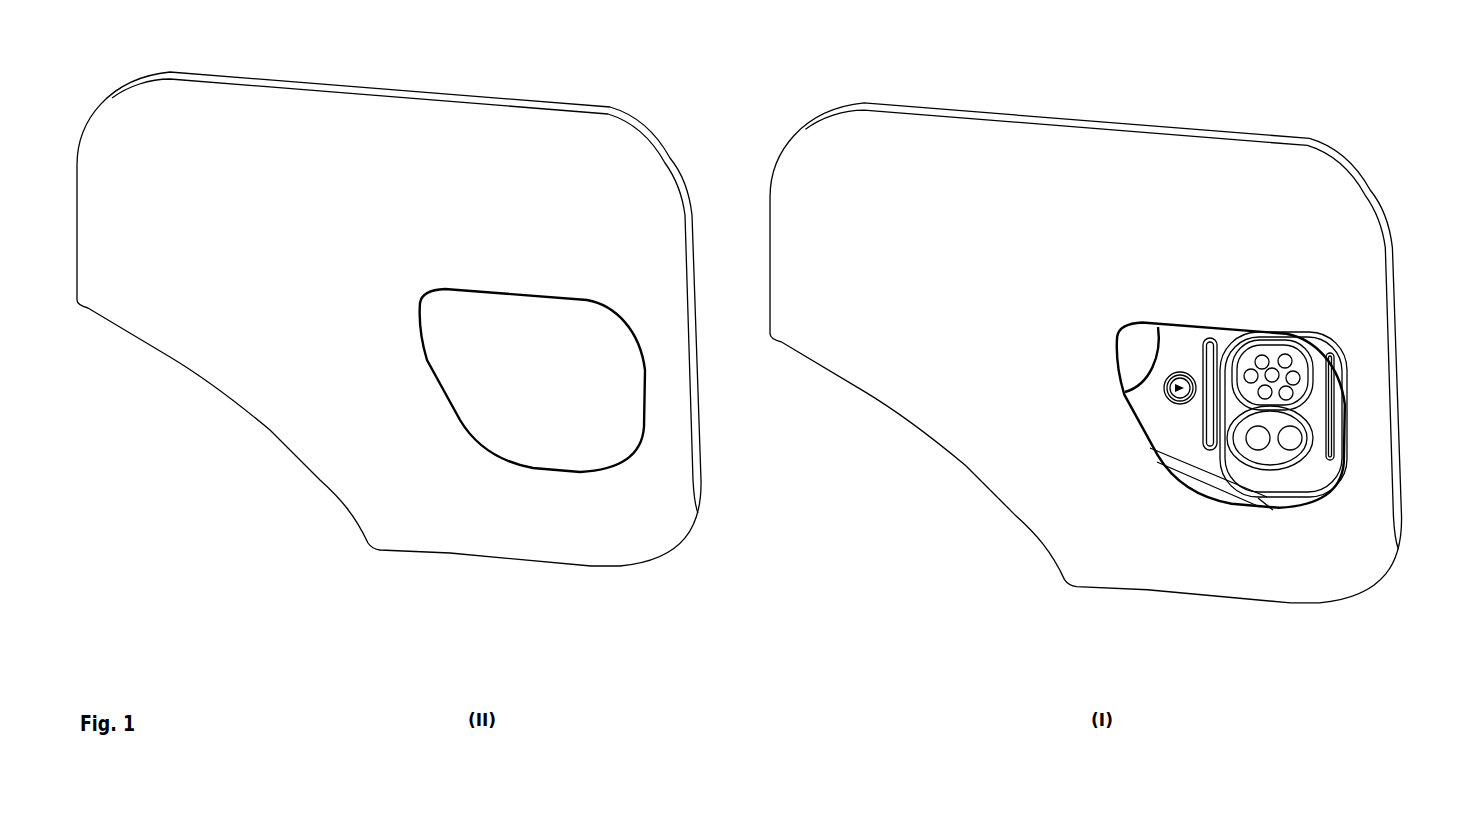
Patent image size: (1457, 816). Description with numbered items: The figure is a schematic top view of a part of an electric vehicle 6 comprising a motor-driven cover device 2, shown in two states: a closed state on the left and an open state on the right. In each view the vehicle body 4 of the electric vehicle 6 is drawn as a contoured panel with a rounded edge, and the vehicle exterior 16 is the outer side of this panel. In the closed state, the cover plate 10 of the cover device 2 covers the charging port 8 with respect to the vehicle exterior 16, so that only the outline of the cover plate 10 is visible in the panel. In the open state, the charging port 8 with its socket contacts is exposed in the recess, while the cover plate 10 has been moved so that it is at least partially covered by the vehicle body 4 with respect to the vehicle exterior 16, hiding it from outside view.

The motor-driven cover device 2 is at (690, 606).
The vehicle body 4 is at (582, 130).
The electric vehicle 6 is at (470, 70).
The charging port 8 is at (1310, 417).
The cover plate 10 is at (617, 437).
The vehicle exterior 16 is at (152, 487).